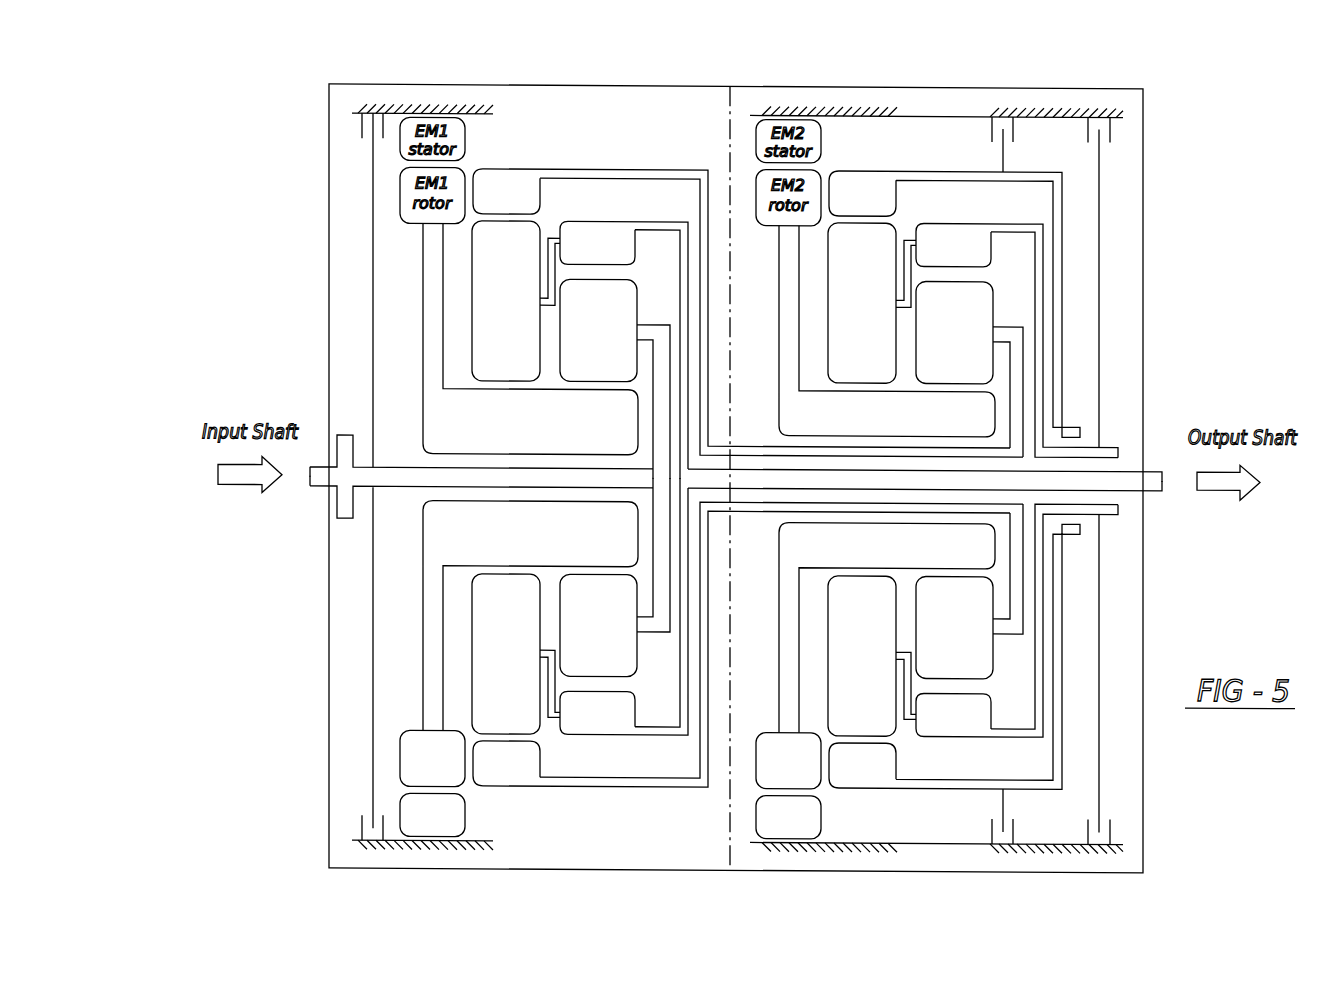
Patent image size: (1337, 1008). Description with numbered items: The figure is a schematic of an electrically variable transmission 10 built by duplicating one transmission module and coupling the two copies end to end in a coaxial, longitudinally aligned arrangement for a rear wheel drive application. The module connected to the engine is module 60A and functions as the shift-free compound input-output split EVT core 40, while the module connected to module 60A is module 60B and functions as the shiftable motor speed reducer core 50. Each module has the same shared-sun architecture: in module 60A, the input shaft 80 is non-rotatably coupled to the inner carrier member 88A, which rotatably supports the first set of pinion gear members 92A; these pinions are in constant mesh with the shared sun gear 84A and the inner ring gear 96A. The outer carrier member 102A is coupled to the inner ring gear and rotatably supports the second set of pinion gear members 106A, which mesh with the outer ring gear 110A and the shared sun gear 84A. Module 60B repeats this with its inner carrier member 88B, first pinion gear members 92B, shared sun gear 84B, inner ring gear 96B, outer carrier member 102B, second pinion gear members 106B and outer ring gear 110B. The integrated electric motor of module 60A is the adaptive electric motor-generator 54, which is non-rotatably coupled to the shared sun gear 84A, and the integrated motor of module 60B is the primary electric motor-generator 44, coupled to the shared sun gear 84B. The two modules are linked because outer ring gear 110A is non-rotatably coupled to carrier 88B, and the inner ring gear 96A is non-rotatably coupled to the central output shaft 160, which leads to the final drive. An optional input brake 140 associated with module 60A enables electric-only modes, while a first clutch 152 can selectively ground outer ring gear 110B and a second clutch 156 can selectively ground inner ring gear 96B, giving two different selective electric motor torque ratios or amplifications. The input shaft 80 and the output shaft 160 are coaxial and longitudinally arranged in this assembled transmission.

The electrically variable transmission 10 is at (1199, 61).
The EVT core 40 is at (713, 83).
The primary electric motor-generator 44 is at (836, 149).
The motor speed reducer core 50 is at (818, 82).
The adaptive electric motor-generator 54 is at (472, 149).
The module 60A is at (565, 76).
The module 60B is at (968, 71).
The input shaft 80 is at (413, 479).
The shared sun gear 84A is at (548, 442).
The shared sun gear 84B is at (923, 426).
The inner carrier member 88A is at (662, 391).
The inner carrier member 88B is at (1018, 363).
The first set of pinion gear members 92A is at (620, 343).
The first set of pinion gear members 92B is at (976, 341).
The inner ring gear 96A is at (615, 246).
The inner ring gear 96B is at (968, 243).
The outer carrier member 102A is at (550, 234).
The outer carrier member 102B is at (905, 235).
The second set of pinion gear members 106A is at (516, 301).
The second set of pinion gear members 106B is at (880, 311).
The outer ring gear 110A is at (512, 189).
The outer ring gear 110B is at (862, 194).
The input brake 140 is at (358, 182).
The first clutch 152 is at (1038, 87).
The second clutch 156 is at (1122, 89).
The output shaft 160 is at (1103, 478).